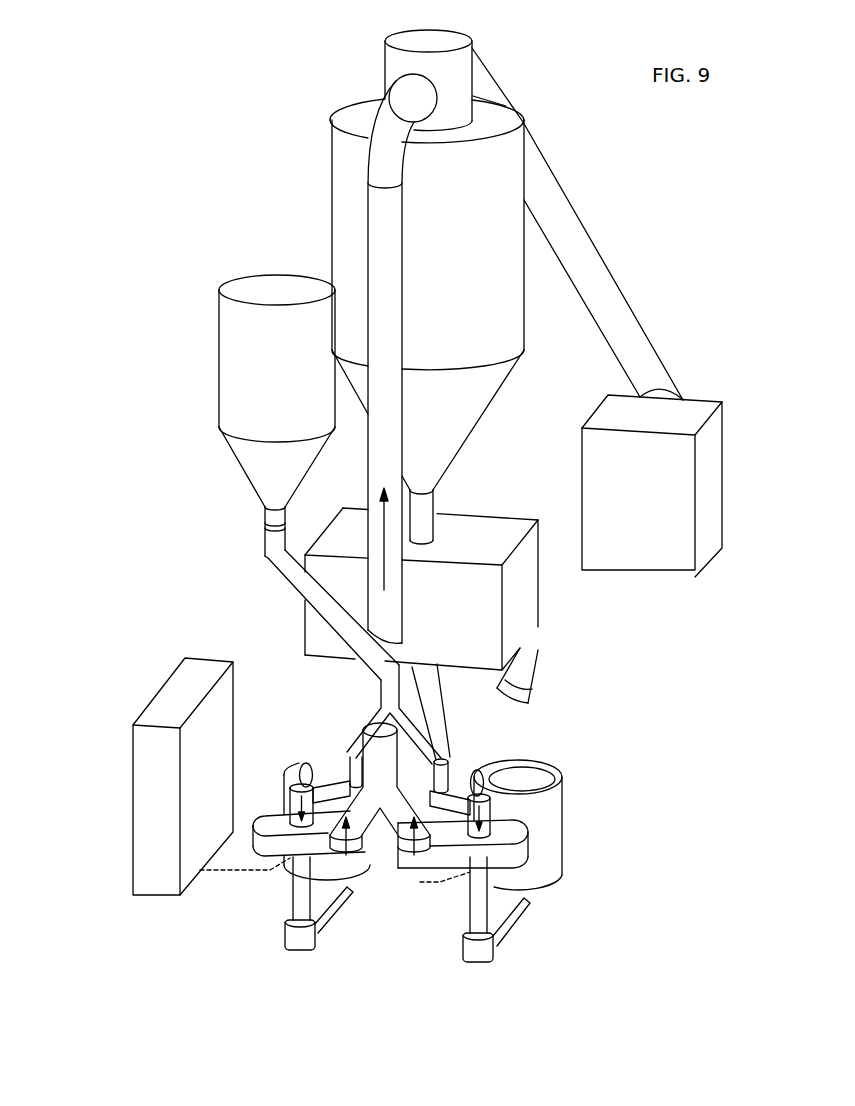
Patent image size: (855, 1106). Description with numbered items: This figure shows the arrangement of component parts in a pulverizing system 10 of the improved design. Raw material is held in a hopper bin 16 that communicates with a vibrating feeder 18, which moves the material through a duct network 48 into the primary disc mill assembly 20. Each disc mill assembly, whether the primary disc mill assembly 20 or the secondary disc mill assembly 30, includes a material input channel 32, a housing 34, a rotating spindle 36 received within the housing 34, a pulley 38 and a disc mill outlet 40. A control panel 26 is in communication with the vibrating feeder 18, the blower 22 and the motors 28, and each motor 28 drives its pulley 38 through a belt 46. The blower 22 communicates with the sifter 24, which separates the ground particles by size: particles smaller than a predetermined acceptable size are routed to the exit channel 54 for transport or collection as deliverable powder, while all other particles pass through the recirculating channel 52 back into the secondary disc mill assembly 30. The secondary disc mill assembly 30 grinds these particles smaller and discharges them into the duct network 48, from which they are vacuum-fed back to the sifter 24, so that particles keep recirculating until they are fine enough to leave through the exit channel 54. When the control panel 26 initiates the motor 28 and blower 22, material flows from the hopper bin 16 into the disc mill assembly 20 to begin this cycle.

The pulverizing system 10 is at (290, 76).
The hopper bin 16 is at (238, 457).
The vibrating feeder 18 is at (345, 787).
The primary disc mill assembly 20 is at (468, 973).
The blower 22 is at (722, 470).
The sifter 24 is at (488, 513).
The control panel 26 is at (133, 780).
The motor 28 is at (350, 890).
The secondary disc mill assembly 30 is at (292, 963).
The material input channel 32 is at (287, 773).
The housing 34 is at (280, 810).
The spindle 36 is at (290, 895).
The pulley 38 is at (305, 950).
The disc mill outlet 40 is at (350, 793).
The belt 46 is at (330, 935).
The duct network 48 is at (368, 460).
The recirculating channel 52 is at (353, 702).
The exit channel 54 is at (523, 687).